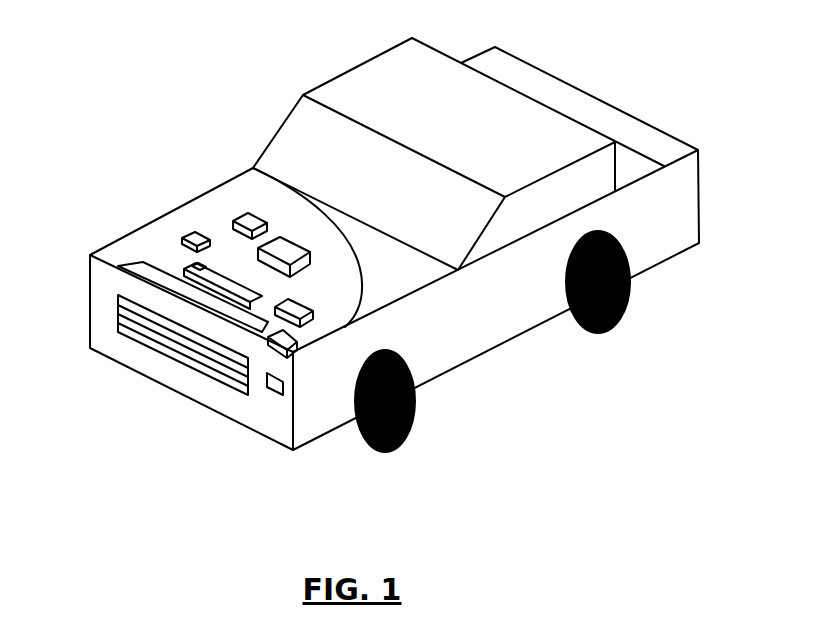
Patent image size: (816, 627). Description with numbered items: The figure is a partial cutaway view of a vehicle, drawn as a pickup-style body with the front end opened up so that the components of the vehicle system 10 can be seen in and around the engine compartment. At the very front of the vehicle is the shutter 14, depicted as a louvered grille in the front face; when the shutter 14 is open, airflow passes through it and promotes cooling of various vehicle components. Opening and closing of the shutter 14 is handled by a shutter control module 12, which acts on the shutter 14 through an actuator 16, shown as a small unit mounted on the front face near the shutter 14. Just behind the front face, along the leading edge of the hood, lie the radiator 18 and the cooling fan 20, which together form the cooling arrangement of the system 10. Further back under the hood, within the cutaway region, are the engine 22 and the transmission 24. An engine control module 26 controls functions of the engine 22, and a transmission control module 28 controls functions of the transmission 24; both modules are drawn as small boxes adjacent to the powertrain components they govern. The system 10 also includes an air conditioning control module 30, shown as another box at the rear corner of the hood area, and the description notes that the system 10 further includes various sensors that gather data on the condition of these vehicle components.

The vehicle system 10 is at (183, 72).
The shutter control module 12 is at (293, 349).
The shutter 14 is at (120, 302).
The actuator 16 is at (275, 394).
The radiator 18 is at (118, 266).
The cooling fan 20 is at (186, 272).
The engine 22 is at (196, 266).
The transmission 24 is at (290, 240).
The engine control module 26 is at (185, 238).
The transmission control module 28 is at (233, 222).
The air conditioning control module 30 is at (300, 311).